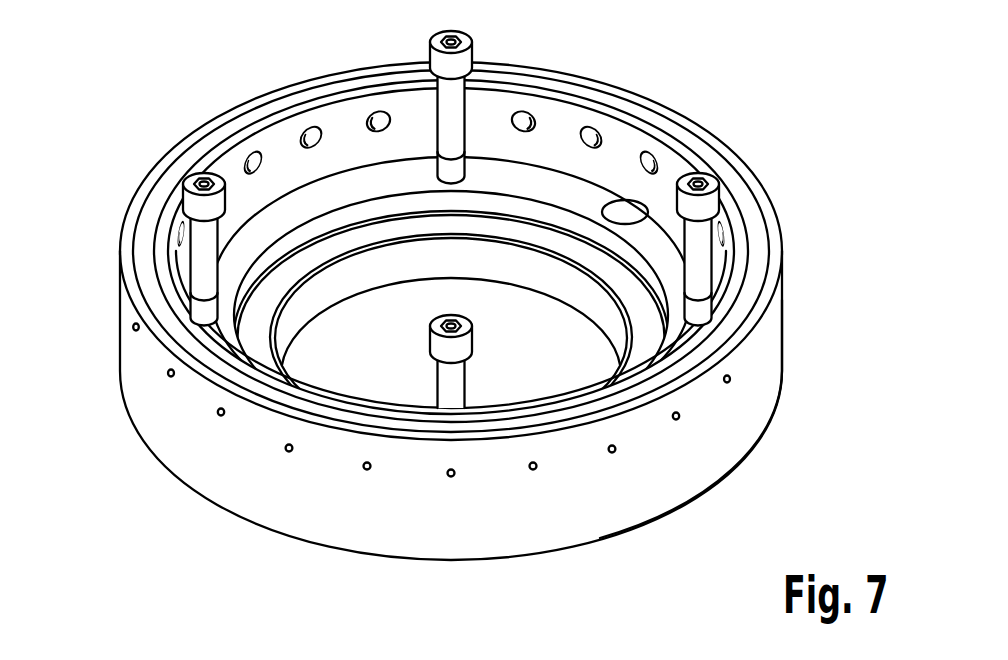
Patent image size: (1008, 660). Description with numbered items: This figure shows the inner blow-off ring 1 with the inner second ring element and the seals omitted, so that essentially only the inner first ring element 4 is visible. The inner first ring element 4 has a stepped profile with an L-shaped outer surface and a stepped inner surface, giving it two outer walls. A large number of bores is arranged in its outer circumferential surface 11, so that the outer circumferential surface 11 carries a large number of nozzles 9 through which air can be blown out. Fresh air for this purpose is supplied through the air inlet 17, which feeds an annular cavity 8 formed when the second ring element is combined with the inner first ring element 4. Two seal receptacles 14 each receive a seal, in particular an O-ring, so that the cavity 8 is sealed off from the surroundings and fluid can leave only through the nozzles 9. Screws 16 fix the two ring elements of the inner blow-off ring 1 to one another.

The inner blow-off ring 1 is at (108, 95).
The inner first ring element 4 is at (213, 463).
The annular cavity 8 is at (356, 152).
The nozzles 9 is at (289, 452).
The outer circumferential surface 11 is at (701, 454).
The seal receptacles 14 is at (540, 240).
The screws 16 is at (188, 183).
The air inlet 17 is at (625, 213).